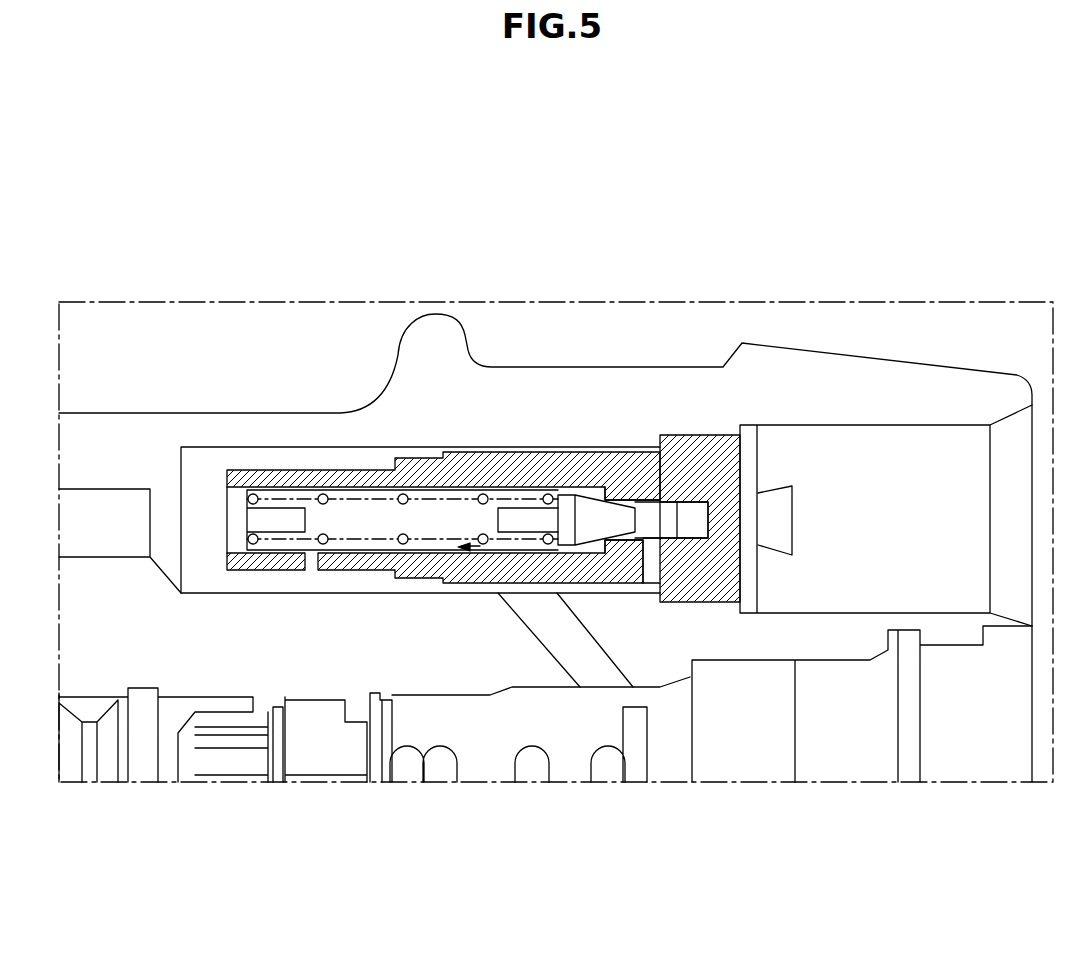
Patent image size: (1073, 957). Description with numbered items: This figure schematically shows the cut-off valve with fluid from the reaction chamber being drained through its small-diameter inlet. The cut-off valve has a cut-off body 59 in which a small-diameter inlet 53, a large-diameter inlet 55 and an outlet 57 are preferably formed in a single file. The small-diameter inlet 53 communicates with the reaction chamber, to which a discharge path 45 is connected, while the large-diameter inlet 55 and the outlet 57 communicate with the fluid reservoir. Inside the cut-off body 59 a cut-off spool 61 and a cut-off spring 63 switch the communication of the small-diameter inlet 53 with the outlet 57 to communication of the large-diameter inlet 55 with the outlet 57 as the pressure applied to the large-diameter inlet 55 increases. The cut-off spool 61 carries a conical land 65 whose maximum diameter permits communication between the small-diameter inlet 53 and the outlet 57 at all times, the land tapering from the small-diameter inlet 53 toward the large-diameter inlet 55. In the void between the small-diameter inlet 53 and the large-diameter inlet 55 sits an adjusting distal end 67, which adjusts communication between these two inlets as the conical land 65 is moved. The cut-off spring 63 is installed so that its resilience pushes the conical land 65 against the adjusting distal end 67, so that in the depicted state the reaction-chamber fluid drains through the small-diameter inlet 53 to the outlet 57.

The discharge path 45 is at (593, 657).
The small-diameter inlet 53 is at (550, 547).
The large-diameter inlet 55 is at (655, 558).
The outlet 57 is at (342, 538).
The cut-off body 59 is at (724, 445).
The cut-off spool 61 is at (512, 520).
The cut-off spring 63 is at (323, 494).
The conical land 65 is at (587, 492).
The adjusting distal end 67 is at (601, 497).